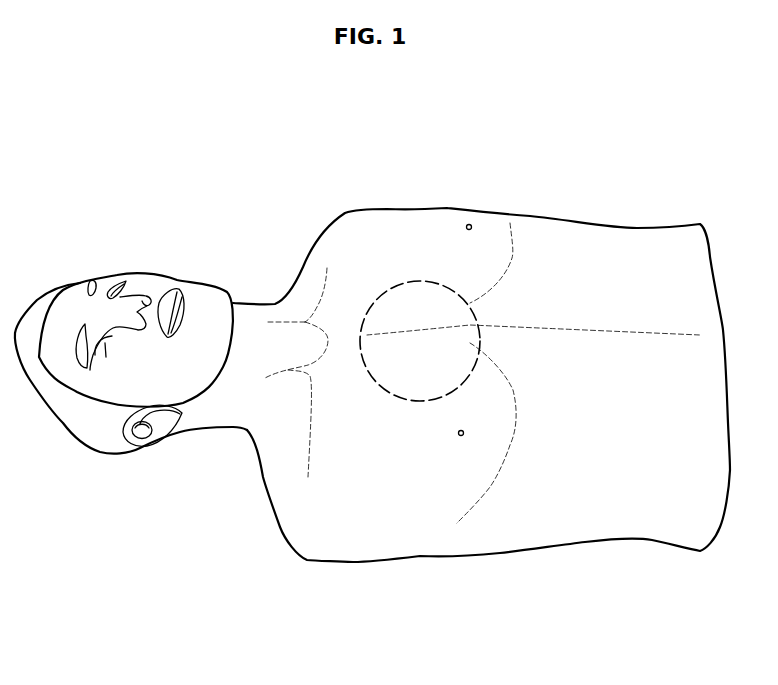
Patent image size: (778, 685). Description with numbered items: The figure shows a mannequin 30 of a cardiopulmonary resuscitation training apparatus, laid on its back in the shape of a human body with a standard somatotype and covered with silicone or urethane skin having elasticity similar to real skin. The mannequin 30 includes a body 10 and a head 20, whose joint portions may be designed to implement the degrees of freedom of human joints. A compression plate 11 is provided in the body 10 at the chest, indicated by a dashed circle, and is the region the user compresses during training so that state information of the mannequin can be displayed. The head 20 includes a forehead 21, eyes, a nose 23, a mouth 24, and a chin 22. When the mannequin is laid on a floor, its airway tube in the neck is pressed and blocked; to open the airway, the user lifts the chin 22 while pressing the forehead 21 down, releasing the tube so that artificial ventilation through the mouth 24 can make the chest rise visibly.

The mannequin 30 is at (387, 103).
The body 10 is at (443, 559).
The compression plate 11 is at (427, 280).
The head 20 is at (92, 441).
The forehead 21 is at (72, 300).
The chin 22 is at (212, 300).
The nose 23 is at (132, 297).
The mouth 24 is at (172, 287).